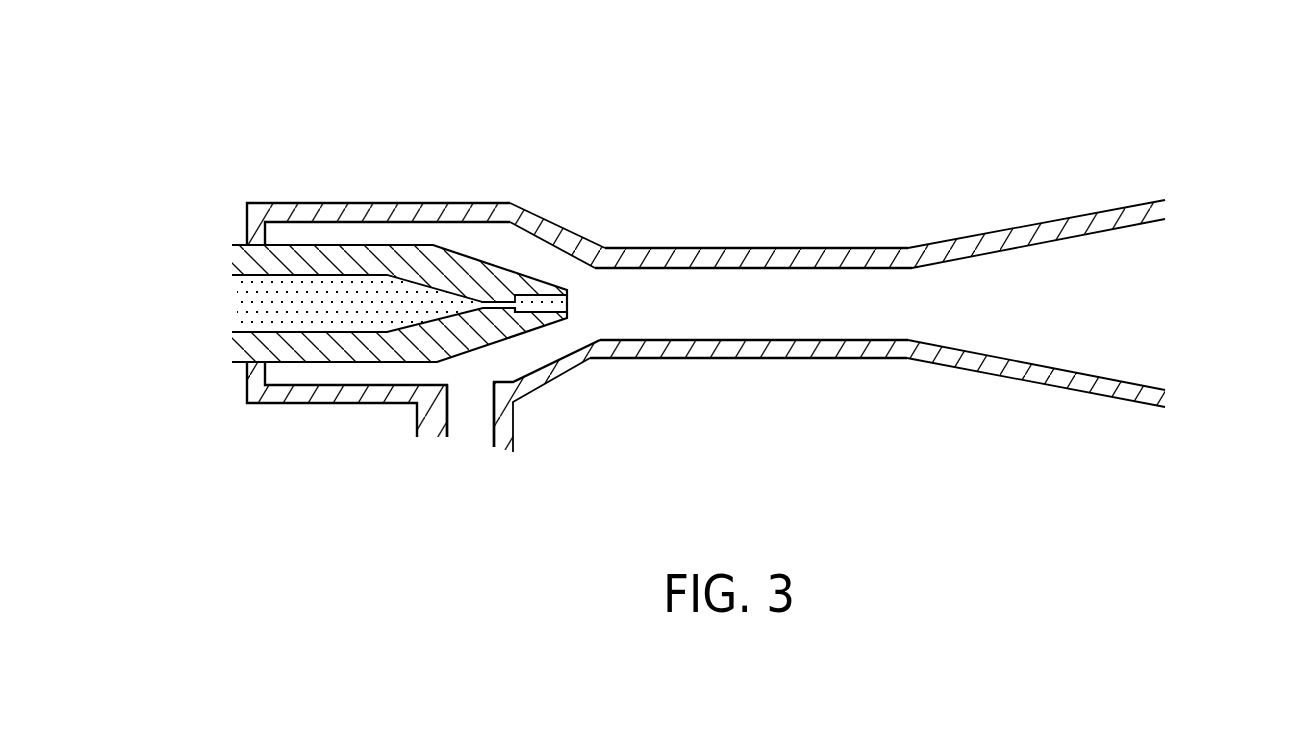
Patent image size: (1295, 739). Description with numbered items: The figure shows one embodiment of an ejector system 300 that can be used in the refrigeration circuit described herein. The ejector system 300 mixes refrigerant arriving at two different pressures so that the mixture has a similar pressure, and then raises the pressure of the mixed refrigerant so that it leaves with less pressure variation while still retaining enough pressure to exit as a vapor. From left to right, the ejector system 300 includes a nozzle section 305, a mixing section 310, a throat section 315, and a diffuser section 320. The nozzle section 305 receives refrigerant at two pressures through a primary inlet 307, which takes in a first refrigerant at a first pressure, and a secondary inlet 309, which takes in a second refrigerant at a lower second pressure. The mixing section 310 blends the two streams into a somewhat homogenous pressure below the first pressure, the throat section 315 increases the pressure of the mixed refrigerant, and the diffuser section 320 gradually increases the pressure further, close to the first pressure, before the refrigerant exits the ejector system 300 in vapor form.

The ejector system 300 is at (1216, 90).
The nozzle section 305 is at (337, 210).
The primary inlet 307 is at (237, 308).
The secondary inlet 309 is at (466, 437).
The mixing section 310 is at (590, 305).
The throat section 315 is at (777, 287).
The diffuser section 320 is at (1073, 260).